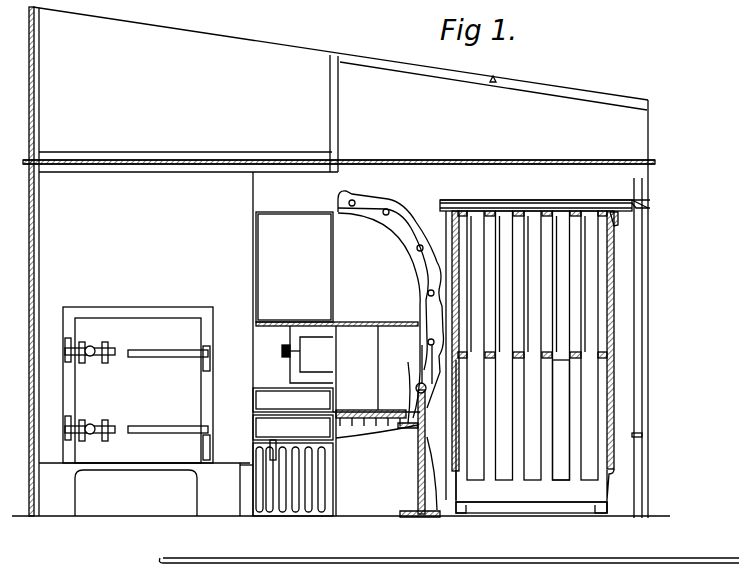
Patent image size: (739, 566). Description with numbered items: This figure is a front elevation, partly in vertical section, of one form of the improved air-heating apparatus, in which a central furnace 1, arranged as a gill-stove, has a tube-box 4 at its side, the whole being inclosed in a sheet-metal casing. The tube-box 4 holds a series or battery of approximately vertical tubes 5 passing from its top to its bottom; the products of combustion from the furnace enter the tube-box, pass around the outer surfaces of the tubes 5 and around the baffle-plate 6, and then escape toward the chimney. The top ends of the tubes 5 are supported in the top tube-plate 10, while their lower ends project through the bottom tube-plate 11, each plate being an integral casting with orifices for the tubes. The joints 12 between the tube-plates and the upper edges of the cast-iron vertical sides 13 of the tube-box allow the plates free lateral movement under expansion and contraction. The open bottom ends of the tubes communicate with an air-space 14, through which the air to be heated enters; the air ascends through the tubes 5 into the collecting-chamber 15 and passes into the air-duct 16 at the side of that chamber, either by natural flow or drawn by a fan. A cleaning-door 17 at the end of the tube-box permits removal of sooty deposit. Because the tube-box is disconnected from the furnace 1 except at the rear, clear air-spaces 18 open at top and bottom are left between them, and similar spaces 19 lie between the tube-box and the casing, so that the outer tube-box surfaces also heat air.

The central furnace 1 is at (330, 364).
The tube-box 4 is at (603, 388).
The tubes 5 is at (654, 415).
The baffle-plate 6 is at (546, 360).
The top tube-plate 10 is at (572, 211).
The bottom tube-plate 11 is at (518, 478).
The joint 12 is at (458, 210).
The vertical side of the tube-box 13 is at (459, 321).
The air-space 14 is at (531, 497).
The collecting-chamber 15 is at (460, 126).
The air-duct 16 is at (75, 103).
The cleaning-door 17 is at (138, 385).
The air-space 18 is at (427, 431).
The space 19 is at (622, 457).